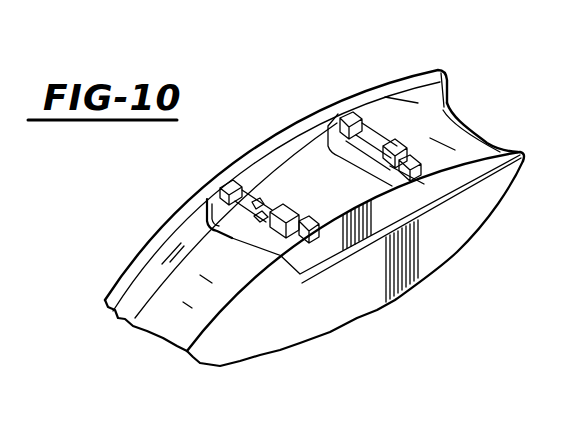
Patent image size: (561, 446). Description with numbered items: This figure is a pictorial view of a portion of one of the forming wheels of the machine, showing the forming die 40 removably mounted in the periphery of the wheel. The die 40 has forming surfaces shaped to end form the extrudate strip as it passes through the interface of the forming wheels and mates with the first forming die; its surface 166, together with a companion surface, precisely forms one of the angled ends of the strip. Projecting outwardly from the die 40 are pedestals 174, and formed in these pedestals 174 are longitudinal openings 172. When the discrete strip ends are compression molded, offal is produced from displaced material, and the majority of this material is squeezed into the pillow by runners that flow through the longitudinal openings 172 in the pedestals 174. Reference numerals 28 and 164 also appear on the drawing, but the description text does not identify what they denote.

The side wall of channel 28 is at (372, 265).
The forming die 40 is at (414, 186).
The first clip 164 is at (207, 203).
The surface of the die 166 is at (393, 141).
The longitudinal openings 172 is at (352, 125).
The outwardly projecting pedestals 174 is at (258, 216).